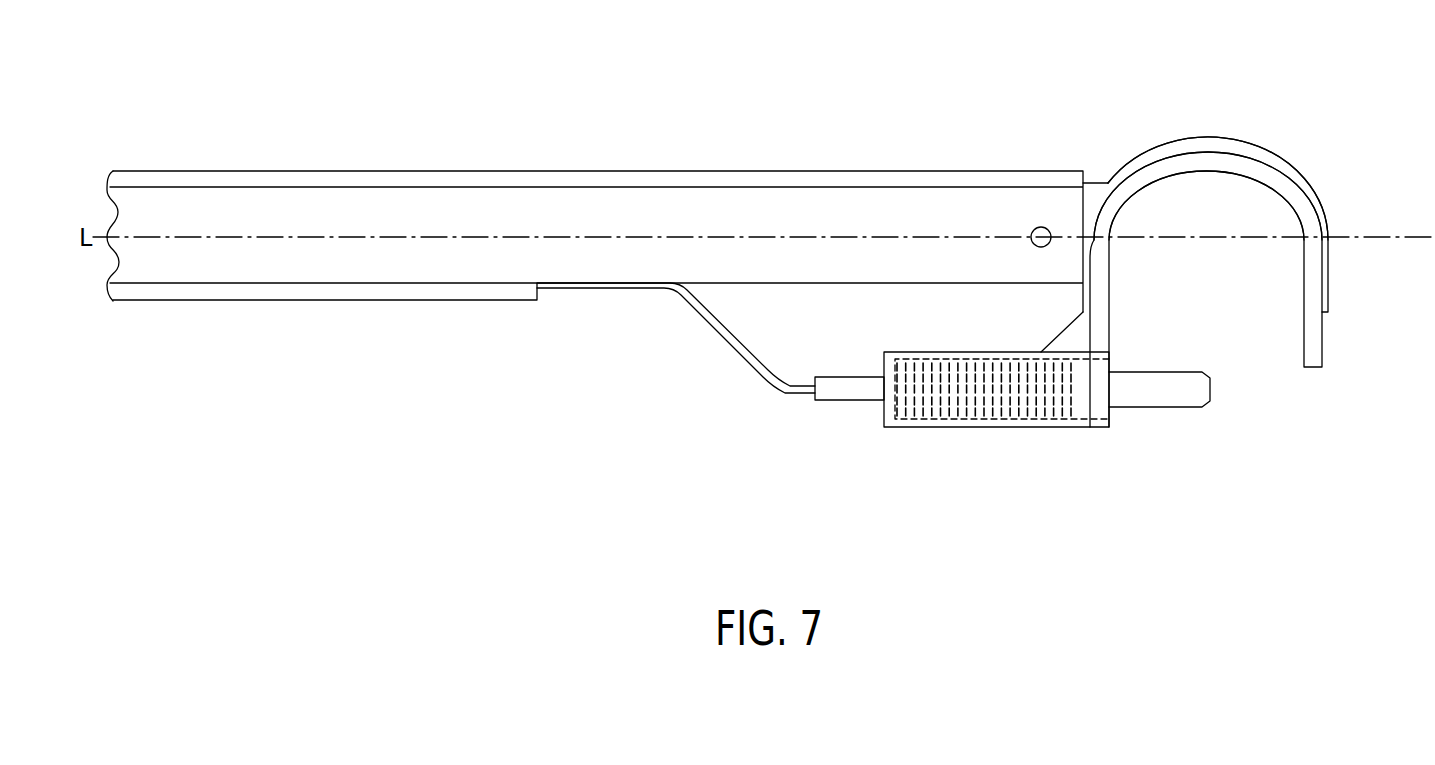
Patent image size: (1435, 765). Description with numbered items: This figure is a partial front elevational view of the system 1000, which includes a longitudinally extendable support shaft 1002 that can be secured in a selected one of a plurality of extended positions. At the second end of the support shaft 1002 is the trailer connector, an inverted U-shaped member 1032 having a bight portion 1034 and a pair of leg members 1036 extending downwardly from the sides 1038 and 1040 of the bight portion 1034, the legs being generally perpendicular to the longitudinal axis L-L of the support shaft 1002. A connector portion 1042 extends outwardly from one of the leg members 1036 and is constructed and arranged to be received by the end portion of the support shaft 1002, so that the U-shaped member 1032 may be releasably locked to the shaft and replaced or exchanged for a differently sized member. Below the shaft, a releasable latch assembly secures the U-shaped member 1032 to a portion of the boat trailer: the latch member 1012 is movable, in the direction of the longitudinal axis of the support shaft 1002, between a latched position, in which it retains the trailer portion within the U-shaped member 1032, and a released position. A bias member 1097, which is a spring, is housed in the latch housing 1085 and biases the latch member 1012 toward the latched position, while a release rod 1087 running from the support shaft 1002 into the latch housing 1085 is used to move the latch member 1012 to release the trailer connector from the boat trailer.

The system 1000 is at (924, 125).
The support shaft 1002 is at (660, 170).
The connector portion 1042 is at (1097, 190).
The inverted U-shaped member 1032 is at (1260, 165).
The bight portion 1034 is at (1195, 145).
The leg members 1036 is at (1107, 308).
The side of the bight portion 1038 is at (1292, 198).
The side of the bight portion 1040 is at (1133, 205).
The release rod 1087 is at (738, 350).
The latch housing 1085 is at (932, 427).
The bias member 1097 is at (1035, 413).
The latch member 1012 is at (1175, 407).